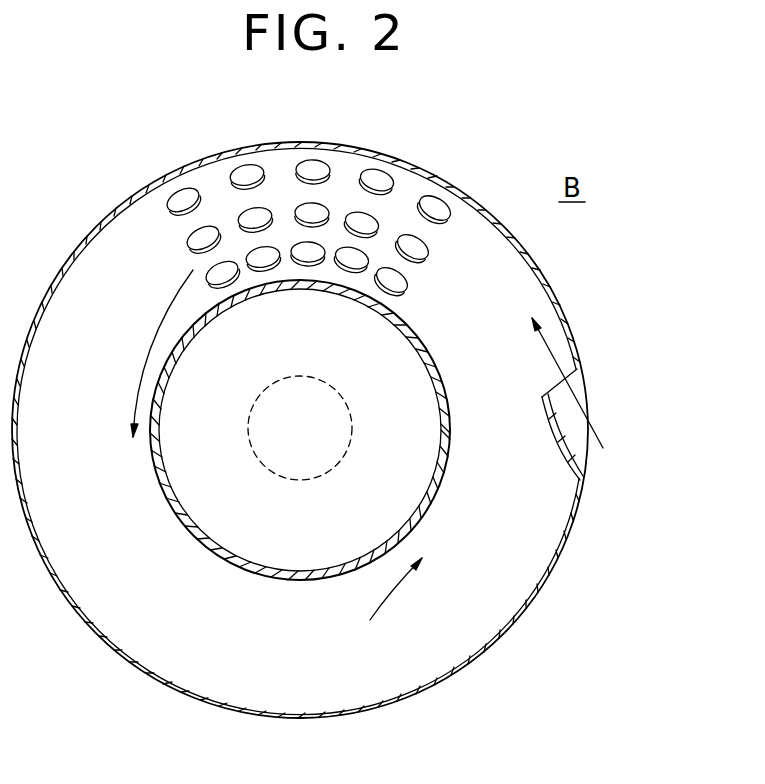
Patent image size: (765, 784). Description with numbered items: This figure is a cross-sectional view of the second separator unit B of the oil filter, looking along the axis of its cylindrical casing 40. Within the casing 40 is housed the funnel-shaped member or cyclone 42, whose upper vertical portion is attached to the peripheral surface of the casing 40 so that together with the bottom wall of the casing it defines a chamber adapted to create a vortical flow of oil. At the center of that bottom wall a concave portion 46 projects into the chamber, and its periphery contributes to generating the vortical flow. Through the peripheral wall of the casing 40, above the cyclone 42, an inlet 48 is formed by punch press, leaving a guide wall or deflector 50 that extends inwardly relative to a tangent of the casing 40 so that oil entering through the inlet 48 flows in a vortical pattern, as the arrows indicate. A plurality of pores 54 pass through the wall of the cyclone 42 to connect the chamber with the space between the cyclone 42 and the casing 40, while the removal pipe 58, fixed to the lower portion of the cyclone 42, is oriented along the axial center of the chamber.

The cylindrical casing 40 is at (553, 565).
The funnel-shaped member or cyclone 42 is at (418, 185).
The concave portion 46 is at (418, 330).
The inlet 48 is at (570, 437).
The guide wall or deflector 50 is at (553, 432).
The pores 54 is at (299, 212).
The removal pipe 58 is at (352, 438).